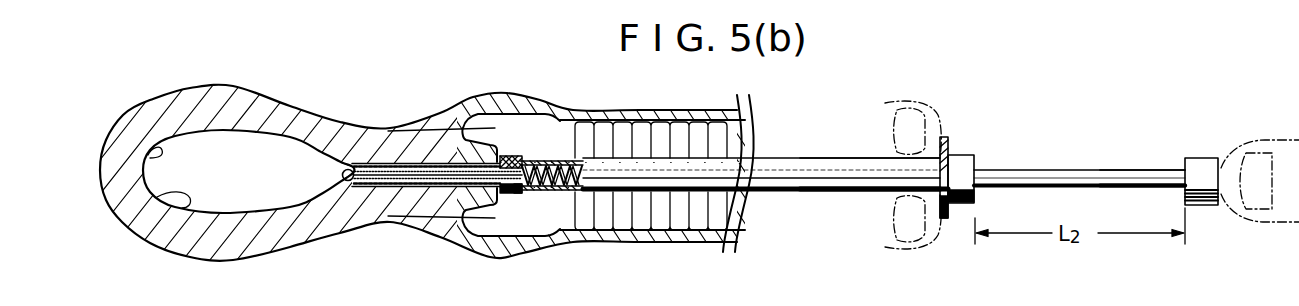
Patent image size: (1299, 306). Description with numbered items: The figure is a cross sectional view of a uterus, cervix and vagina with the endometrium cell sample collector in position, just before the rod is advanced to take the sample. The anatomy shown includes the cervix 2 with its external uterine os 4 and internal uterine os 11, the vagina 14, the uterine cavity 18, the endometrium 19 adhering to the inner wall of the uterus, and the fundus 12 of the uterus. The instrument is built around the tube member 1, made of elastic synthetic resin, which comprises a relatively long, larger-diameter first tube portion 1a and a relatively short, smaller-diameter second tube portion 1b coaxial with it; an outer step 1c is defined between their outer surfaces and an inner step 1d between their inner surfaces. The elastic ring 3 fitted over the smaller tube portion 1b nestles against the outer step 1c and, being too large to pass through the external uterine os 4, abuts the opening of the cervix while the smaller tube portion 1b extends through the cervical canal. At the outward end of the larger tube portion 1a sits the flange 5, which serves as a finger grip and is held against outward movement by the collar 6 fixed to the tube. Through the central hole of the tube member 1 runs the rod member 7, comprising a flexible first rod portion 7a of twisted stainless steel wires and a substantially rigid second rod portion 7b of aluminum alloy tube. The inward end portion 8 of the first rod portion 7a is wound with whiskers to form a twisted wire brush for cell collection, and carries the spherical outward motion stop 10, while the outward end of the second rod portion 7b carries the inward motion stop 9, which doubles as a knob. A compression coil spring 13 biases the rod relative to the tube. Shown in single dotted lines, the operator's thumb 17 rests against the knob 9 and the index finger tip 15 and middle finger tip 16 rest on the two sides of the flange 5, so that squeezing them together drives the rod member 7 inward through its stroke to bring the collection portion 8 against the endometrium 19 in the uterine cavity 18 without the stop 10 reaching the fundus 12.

The tube member 1 is at (771, 155).
The first tube portion 1a is at (828, 157).
The second tube portion 1b is at (450, 162).
The outer step 1c is at (506, 193).
The inner step 1d is at (522, 191).
The cervix 2 is at (387, 170).
The elastic ring 3 is at (509, 156).
The external uterine os 4 is at (486, 120).
The flange 5 is at (948, 138).
The collar 6 is at (972, 156).
The rod member 7 is at (1060, 168).
The first rod portion 7a is at (521, 165).
The second rod portion 7b is at (1121, 168).
The end portion 8 is at (410, 164).
The inward motion stop 9 is at (1198, 157).
The outward motion stop 10 is at (342, 176).
The internal uterine os 11 is at (342, 165).
The fundus 12 is at (166, 140).
The compression coil spring 13 is at (573, 152).
The vagina 14 is at (639, 130).
The index finger tip 15 is at (934, 118).
The middle finger tip 16 is at (920, 241).
The thumb 17 is at (1241, 146).
The uterine cavity 18 is at (253, 142).
The endometrium 19 is at (145, 205).